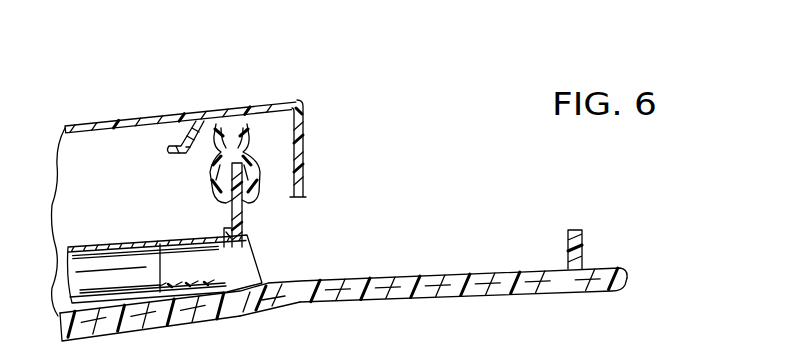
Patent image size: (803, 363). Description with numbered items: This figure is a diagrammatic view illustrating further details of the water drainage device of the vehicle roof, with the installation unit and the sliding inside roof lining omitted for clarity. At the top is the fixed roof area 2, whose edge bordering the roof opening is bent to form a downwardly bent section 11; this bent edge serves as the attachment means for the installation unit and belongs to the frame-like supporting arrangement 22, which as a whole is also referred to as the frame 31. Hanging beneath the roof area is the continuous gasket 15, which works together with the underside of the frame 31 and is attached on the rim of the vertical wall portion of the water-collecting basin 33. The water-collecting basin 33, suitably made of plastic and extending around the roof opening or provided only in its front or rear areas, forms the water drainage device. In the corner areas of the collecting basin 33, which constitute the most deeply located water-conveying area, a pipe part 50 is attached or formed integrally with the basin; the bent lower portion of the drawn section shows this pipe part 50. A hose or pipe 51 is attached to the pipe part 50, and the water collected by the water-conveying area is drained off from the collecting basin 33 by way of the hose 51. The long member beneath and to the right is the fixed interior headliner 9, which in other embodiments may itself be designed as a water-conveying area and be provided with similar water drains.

The fixed roof area 2 is at (133, 119).
The continuous gasket 15 is at (231, 124).
The frame 31 is at (296, 171).
The downwardly bent section 11 is at (298, 148).
The frame-like supporting arrangement 22 is at (298, 148).
The hose or pipe 51 is at (114, 246).
The pipe part 50 is at (270, 313).
The water-collecting basin 33 is at (404, 273).
The fixed interior headliner 9 is at (487, 292).